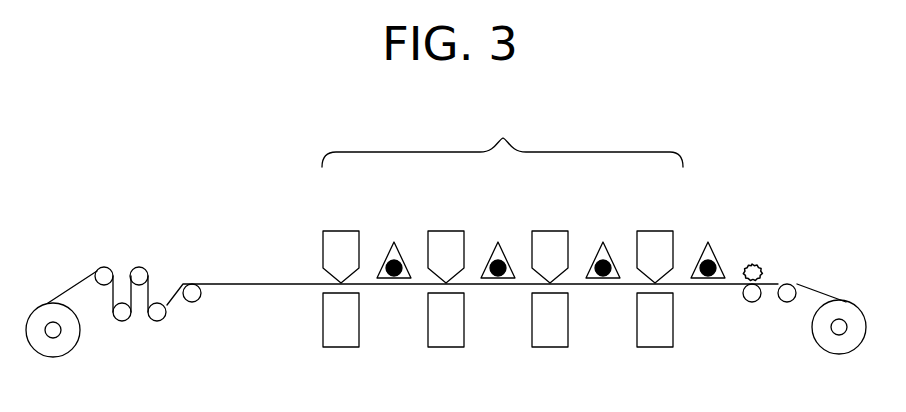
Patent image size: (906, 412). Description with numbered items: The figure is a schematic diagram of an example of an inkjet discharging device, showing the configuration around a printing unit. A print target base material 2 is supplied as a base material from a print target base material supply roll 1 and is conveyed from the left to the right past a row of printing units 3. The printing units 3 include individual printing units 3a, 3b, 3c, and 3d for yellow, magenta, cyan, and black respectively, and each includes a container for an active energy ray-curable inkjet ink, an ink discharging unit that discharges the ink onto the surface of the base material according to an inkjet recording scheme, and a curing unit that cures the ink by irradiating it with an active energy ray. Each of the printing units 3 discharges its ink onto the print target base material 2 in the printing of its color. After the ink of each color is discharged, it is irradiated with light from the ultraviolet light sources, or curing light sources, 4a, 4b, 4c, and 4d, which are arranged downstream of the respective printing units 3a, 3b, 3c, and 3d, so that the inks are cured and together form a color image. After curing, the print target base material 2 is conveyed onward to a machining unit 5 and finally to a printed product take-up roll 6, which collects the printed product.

The print target base material supply roll 1 is at (57, 332).
The print target base material 2 is at (232, 284).
The printing units 3 is at (506, 135).
The printing unit 3a is at (337, 241).
The printing unit 3b is at (441, 241).
The printing unit 3c is at (545, 241).
The printing unit 3d is at (643, 242).
The ultraviolet light source 4a is at (396, 241).
The ultraviolet light source 4b is at (500, 241).
The ultraviolet light source 4c is at (605, 241).
The ultraviolet light source 4d is at (710, 241).
The machining unit 5 is at (766, 262).
The printed product take-up roll 6 is at (831, 328).